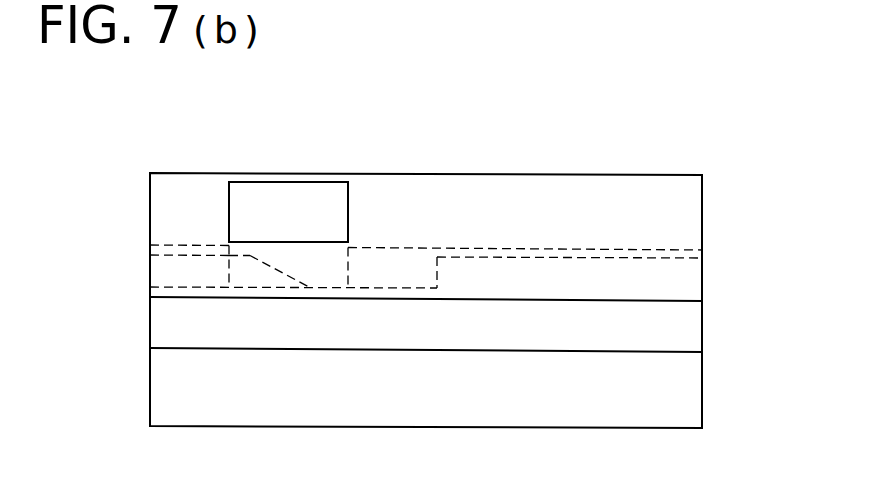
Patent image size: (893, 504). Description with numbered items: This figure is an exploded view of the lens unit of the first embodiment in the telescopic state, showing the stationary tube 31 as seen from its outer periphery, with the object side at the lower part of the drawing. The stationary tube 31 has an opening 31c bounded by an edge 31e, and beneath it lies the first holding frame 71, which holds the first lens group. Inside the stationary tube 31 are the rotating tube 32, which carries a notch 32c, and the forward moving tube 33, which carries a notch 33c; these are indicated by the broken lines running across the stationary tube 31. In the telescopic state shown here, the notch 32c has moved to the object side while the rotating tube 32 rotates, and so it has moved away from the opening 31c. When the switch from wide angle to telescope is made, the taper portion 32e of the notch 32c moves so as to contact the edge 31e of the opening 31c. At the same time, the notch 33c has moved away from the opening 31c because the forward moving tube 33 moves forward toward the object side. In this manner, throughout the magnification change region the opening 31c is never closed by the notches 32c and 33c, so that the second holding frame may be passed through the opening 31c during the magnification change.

The stationary tube 31 is at (648, 173).
The opening 31c is at (300, 202).
The edge 31e is at (237, 237).
The rotating tube 32 is at (678, 260).
The notch 32c is at (388, 287).
The taper portion 32e is at (271, 268).
The forward moving tube 33 is at (650, 248).
The notch 33c is at (229, 265).
The first holding frame 71 is at (685, 402).